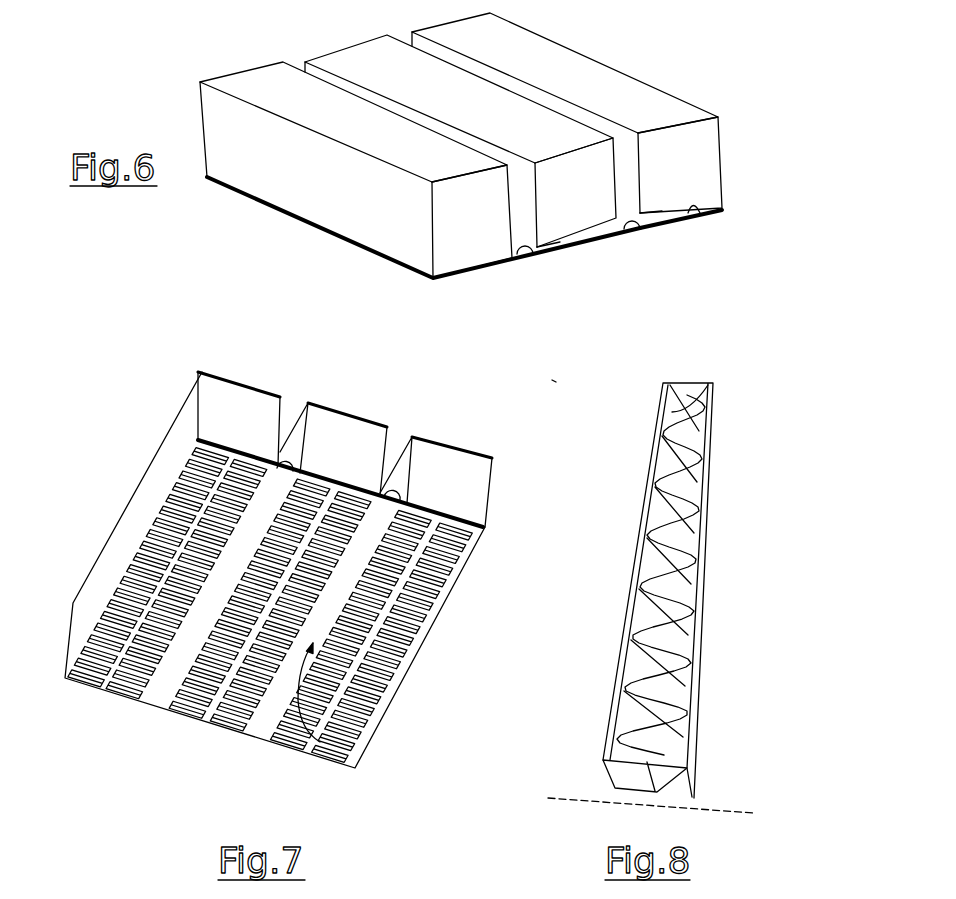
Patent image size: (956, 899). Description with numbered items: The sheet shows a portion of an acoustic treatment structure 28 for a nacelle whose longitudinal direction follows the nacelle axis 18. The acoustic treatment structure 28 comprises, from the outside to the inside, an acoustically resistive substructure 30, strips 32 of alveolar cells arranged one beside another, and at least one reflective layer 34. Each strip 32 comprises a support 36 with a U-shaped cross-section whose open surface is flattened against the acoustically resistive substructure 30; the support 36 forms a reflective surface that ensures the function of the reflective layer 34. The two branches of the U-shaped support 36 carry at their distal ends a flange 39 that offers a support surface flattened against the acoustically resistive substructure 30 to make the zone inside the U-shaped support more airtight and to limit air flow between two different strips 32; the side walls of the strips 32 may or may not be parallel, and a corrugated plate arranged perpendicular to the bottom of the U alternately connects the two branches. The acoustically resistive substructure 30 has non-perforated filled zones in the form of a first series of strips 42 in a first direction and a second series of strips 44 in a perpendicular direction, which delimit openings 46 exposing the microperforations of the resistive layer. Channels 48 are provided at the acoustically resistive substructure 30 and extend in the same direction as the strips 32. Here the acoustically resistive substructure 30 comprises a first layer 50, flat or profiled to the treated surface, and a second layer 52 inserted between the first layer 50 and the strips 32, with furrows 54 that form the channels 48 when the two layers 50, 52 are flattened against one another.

In FIG. 8, the axis of the nacelle 18 is at (708, 810).
In FIG. 6, the acoustic treatment structure 28 is at (287, 230).
In FIG. 7, the acoustic treatment structure 28 is at (137, 457).
In FIG. 6, the acoustically resistive substructure 30 is at (713, 223).
In FIG. 7, the acoustically resistive substructure 30 is at (358, 752).
In FIG. 6, the strips of alveolar cells 32 is at (660, 183).
In FIG. 7, the strips of alveolar cells 32 is at (435, 452).
In FIG. 6, the reflective layer 34 is at (443, 30).
In FIG. 6, the support 36 is at (205, 178).
In FIG. 7, the support 36 is at (485, 530).
In FIG. 7, the flange 39 is at (555, 380).
In FIG. 8, the flange 39 is at (712, 382).
In FIG. 7, the first series of strips 42 is at (313, 753).
In FIG. 7, the second series of strips 44 is at (377, 733).
In FIG. 7, the openings 46 is at (400, 688).
In FIG. 6, the channels 48 is at (530, 258).
In FIG. 7, the channels 48 is at (284, 470).
In FIG. 6, the first layer 50 is at (722, 210).
In FIG. 6, the second layer 52 is at (692, 208).
In FIG. 6, the furrows 54 is at (547, 237).